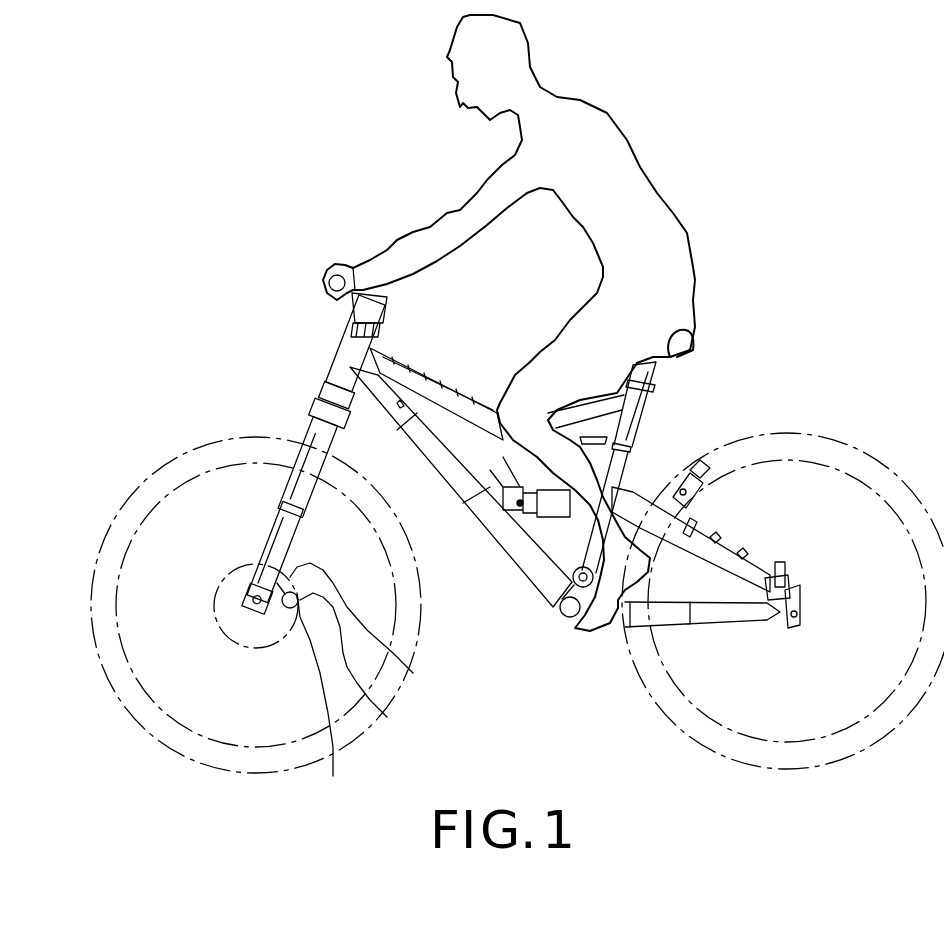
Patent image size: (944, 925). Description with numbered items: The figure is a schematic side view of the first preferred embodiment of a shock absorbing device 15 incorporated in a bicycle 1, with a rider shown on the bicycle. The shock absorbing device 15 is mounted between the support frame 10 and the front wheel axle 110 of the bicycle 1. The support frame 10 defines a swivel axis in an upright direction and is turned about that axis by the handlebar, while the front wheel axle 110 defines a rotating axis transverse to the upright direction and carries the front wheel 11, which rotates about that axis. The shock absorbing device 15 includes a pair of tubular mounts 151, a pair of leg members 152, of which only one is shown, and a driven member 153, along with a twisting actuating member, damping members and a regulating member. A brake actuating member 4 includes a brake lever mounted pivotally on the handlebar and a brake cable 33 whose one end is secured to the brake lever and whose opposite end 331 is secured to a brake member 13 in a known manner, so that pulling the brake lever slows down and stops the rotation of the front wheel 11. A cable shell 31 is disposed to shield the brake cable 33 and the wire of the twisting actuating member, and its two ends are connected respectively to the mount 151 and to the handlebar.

The bicycle 1 is at (515, 575).
The support frame 10 is at (452, 352).
The front wheel 11 is at (95, 563).
The front wheel axle 110 is at (253, 604).
The brake member 13 is at (324, 700).
The shock absorbing device 15 is at (212, 469).
The tubular mounts 151 is at (318, 415).
The leg members 152 is at (262, 560).
The driven member 153 is at (333, 397).
The cable shell 31 is at (345, 358).
The brake cable 33 is at (373, 655).
The opposite end of the brake cable 331 is at (387, 717).
The brake actuating member 4 is at (323, 280).